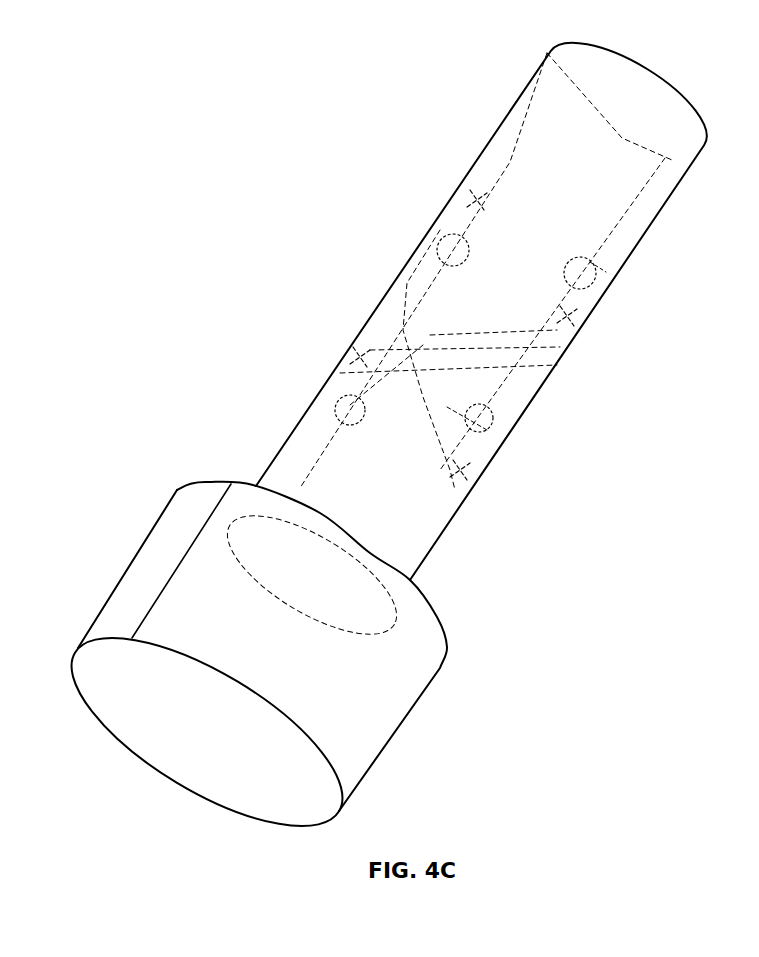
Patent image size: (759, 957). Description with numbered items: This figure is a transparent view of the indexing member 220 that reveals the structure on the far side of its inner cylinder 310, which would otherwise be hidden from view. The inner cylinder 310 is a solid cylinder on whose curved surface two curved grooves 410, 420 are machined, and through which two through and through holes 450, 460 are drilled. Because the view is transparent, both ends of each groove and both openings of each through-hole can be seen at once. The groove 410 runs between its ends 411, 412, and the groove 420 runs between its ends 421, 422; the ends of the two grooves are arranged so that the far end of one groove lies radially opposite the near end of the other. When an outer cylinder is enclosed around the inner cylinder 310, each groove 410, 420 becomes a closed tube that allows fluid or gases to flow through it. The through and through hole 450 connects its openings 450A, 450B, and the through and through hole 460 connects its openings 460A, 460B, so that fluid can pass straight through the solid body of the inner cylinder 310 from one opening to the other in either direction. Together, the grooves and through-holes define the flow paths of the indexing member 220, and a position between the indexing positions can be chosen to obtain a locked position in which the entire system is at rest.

The indexing member 220 is at (152, 521).
The inner cylinder 310 is at (400, 128).
The groove 410 is at (507, 355).
The end of groove 410 411 is at (366, 358).
The end of groove 410 412 is at (588, 321).
The groove 420 is at (413, 403).
The end of groove 420 421 is at (487, 190).
The end of groove 420 422 is at (466, 481).
The through and through hole 450 is at (603, 268).
The opening 450A is at (600, 265).
The opening 450B is at (447, 247).
The through and through hole 460 is at (500, 428).
The opening 460A is at (490, 445).
The opening 460B is at (345, 405).